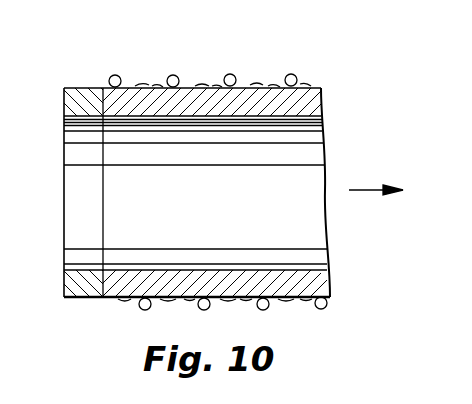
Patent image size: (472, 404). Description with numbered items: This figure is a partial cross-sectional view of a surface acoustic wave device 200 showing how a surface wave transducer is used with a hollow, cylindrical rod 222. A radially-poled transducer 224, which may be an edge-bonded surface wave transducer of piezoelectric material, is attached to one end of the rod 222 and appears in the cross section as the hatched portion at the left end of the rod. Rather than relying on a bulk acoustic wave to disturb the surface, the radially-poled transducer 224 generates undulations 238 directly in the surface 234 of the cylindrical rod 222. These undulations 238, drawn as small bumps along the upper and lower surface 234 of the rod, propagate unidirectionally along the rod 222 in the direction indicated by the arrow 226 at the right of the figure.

The electronic package assembly 200 is at (172, 78).
The hollow cylindrical rod 222 is at (324, 97).
The radially-poled transducer 224 is at (74, 88).
The arrow 226 is at (373, 191).
The surface of the cylindrical rod 234 is at (248, 86).
The undulations 238 is at (304, 80).